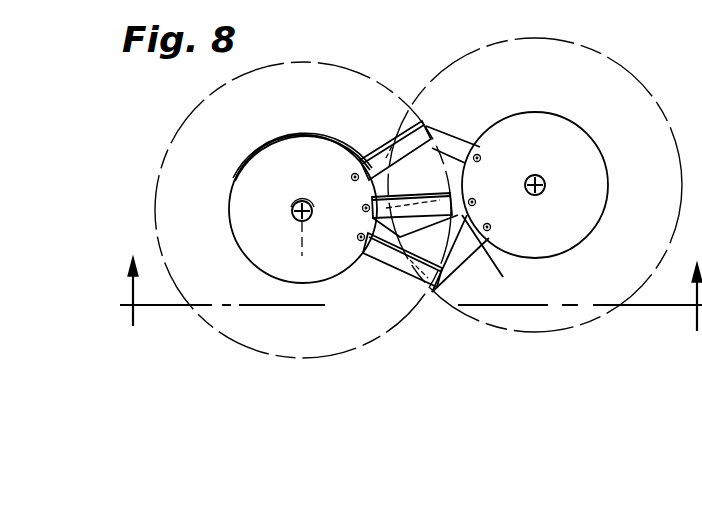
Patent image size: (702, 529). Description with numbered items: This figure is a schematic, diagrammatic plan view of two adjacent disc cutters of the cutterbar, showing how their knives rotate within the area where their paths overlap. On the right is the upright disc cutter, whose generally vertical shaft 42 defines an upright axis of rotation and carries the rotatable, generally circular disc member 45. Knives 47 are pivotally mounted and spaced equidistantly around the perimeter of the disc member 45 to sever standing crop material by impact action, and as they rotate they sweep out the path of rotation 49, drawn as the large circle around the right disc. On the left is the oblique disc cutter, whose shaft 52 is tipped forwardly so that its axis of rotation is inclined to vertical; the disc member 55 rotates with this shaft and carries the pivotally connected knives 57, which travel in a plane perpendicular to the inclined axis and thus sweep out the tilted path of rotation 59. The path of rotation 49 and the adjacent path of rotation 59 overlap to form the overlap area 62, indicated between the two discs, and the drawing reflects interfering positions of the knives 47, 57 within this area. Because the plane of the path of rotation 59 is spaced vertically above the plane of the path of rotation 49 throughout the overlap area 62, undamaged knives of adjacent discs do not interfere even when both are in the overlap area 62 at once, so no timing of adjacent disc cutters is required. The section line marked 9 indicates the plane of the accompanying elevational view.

The shaft 42 is at (547, 187).
The disc member 45 is at (548, 131).
The knives 47 is at (450, 133).
The path of rotation 49 is at (592, 47).
The shaft 52 is at (291, 212).
The disc member 55 is at (266, 164).
The knives 57 is at (366, 150).
The path of rotation 59 is at (281, 61).
The overlap area 62 is at (410, 118).
The section line 9- 9 is at (411, 302).